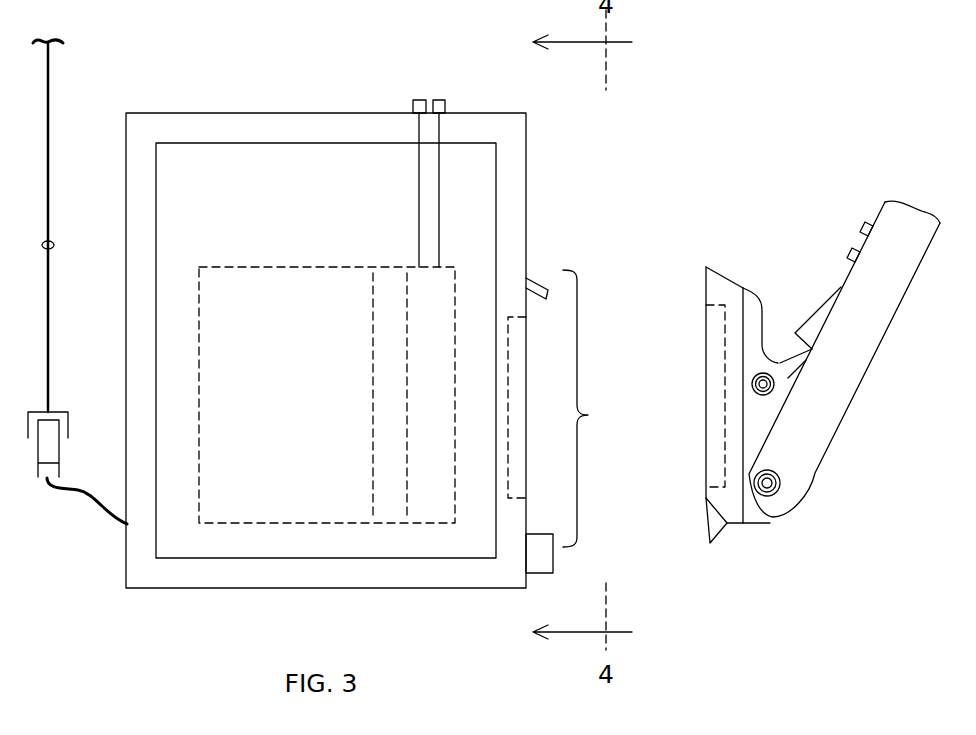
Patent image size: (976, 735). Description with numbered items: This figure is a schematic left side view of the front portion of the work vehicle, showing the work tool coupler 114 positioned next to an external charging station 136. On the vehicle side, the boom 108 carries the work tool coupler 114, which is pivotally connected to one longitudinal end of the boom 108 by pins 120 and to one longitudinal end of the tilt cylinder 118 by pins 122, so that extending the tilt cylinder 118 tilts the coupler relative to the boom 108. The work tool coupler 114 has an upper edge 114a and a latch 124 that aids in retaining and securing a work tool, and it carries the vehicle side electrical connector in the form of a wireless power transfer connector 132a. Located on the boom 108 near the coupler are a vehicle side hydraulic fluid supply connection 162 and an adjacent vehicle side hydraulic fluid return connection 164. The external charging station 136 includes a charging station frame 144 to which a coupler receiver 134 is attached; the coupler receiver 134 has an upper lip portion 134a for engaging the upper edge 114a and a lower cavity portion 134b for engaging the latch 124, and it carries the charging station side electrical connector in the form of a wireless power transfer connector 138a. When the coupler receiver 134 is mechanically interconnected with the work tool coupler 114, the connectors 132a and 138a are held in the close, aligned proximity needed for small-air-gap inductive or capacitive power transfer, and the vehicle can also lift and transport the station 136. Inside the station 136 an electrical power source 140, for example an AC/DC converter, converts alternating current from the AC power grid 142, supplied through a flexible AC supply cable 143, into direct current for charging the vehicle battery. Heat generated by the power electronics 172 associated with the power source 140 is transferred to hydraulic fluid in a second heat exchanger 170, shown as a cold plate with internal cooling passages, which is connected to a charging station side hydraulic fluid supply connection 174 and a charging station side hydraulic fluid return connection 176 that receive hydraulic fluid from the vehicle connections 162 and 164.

The external charging station 136 is at (181, 56).
The charging station frame 144 is at (250, 130).
The AC power grid 142 is at (54, 246).
The flexible AC supply cable 143 is at (75, 493).
The electrical power source 140 is at (239, 523).
The power electronics 172 is at (388, 513).
The second heat exchanger 170 is at (432, 513).
The charging station side hydraulic fluid return connection 176 is at (422, 98).
The charging station side hydraulic fluid supply connection 174 is at (437, 98).
The coupler receiver 134 is at (602, 408).
The upper lip portion 134a is at (537, 277).
The lower cavity portion 134b is at (540, 547).
The wireless power transfer connector 138a is at (518, 430).
The work tool coupler 114 is at (728, 235).
The upper edge 114a is at (706, 267).
The wireless power transfer connector 132a is at (703, 495).
The latch 124 is at (720, 538).
The boom 108 is at (845, 347).
The tilt cylinder 118 is at (812, 327).
The vehicle side hydraulic fluid supply connection 162 is at (852, 250).
The vehicle side hydraulic fluid return connection 164 is at (867, 223).
The pins 122 is at (768, 393).
The pins 120 is at (767, 490).